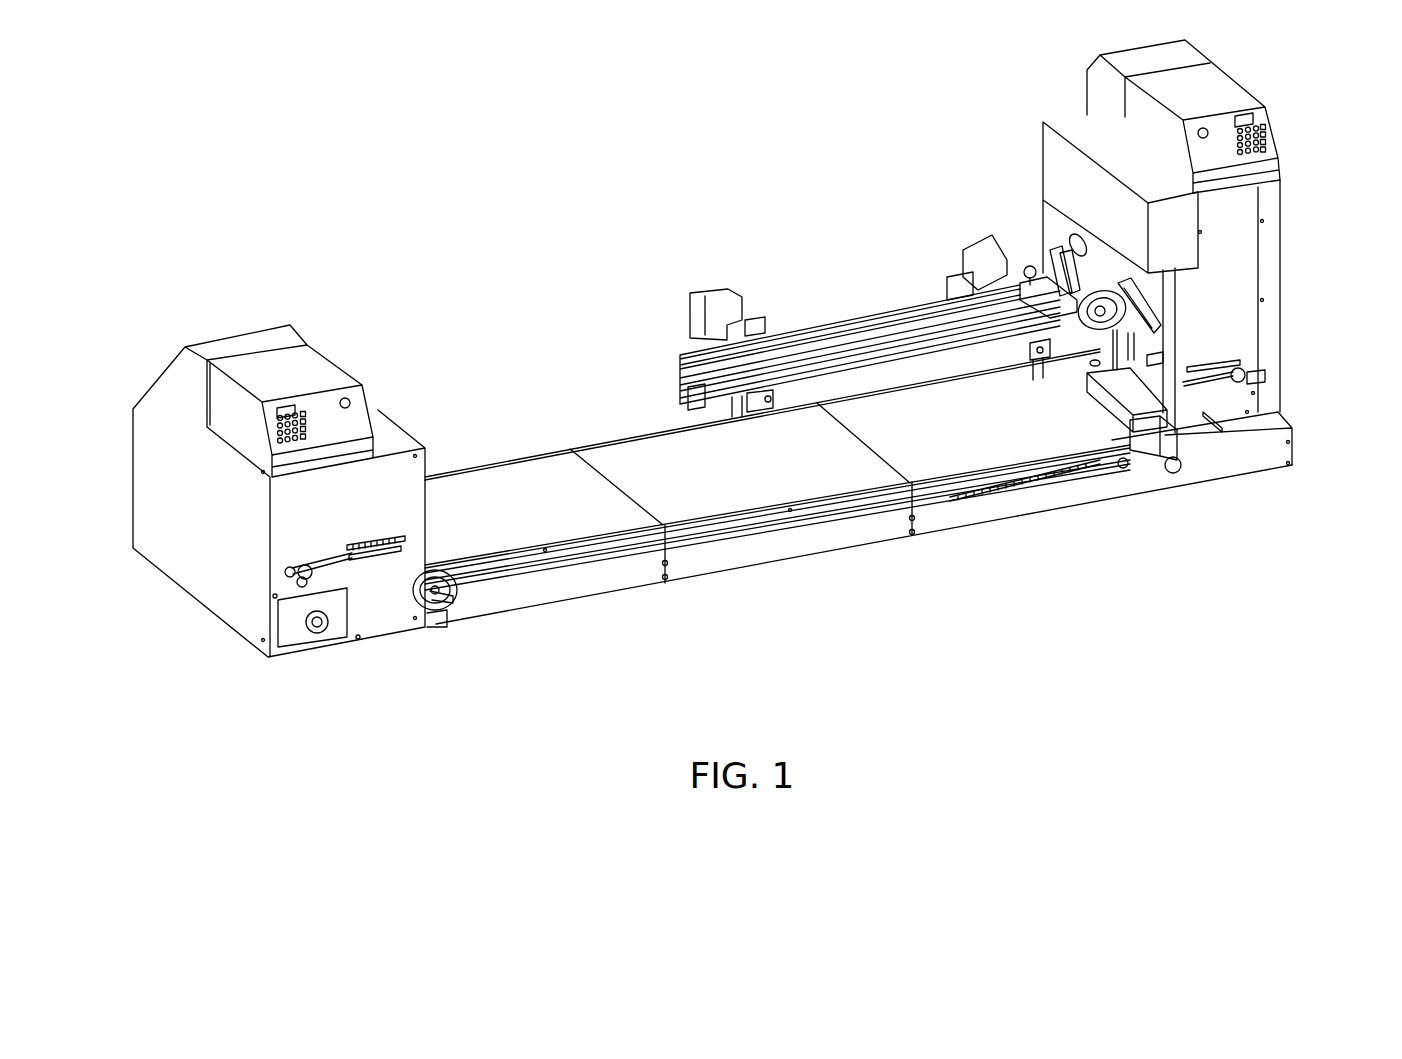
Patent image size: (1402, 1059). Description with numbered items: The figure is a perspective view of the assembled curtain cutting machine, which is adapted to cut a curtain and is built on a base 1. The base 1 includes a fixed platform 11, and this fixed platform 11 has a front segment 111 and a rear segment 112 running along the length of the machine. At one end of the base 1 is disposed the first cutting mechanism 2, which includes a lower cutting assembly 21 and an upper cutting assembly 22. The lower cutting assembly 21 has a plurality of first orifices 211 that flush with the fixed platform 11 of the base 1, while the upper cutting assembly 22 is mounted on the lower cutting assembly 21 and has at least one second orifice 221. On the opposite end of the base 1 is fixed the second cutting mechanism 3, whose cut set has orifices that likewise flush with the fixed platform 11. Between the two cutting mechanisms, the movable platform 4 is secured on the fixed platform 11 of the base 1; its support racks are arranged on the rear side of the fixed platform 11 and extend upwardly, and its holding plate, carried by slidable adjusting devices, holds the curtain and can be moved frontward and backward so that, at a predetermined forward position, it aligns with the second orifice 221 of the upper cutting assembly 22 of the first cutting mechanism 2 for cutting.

The base 1 is at (858, 432).
The fixed platform 11 is at (655, 462).
The front segment 111 is at (710, 563).
The rear segment 112 is at (607, 442).
The first cutting mechanism 2 is at (1166, 303).
The lower cutting assembly 21 is at (1078, 448).
The first orifices 211 is at (1130, 360).
The upper cutting assembly 22 is at (1163, 246).
The second orifice 221 is at (1150, 285).
The second cutting mechanism 3 is at (220, 333).
The movable platform 4 is at (862, 313).